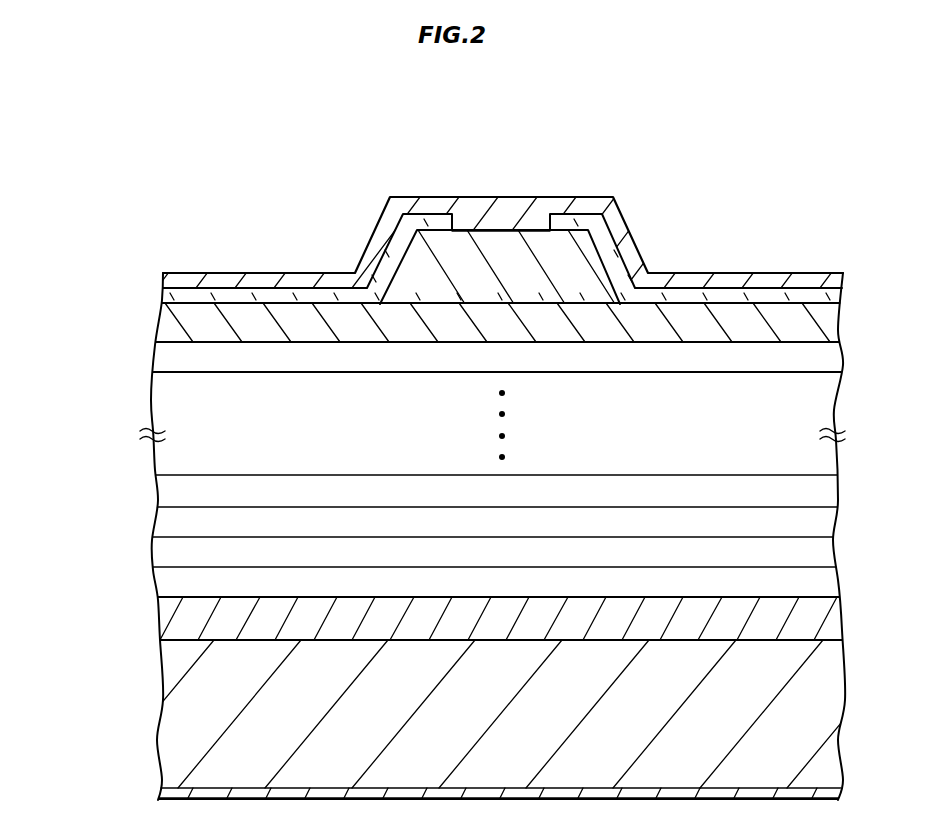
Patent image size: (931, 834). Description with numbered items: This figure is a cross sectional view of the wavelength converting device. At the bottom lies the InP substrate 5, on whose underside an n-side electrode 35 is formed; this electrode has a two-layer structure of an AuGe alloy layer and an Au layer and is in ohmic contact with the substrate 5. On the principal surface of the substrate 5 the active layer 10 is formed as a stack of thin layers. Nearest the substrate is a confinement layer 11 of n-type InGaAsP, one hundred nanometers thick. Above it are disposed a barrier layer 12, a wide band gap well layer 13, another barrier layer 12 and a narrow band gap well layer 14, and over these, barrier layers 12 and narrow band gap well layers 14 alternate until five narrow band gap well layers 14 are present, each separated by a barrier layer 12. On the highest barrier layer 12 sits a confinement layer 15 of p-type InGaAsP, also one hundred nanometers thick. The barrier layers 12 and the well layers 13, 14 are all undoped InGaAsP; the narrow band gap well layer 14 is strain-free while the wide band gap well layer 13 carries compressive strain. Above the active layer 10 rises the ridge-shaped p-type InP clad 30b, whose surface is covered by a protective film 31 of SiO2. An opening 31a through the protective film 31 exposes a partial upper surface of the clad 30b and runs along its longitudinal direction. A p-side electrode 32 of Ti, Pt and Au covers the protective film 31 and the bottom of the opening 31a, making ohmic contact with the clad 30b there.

The InP substrate 5 is at (168, 718).
The n-side electrode 35 is at (162, 795).
The active layer 10 is at (85, 298).
The confinement layer 11 is at (165, 615).
The barrier layer 12 is at (165, 583).
The wide band gap well layer 13 is at (165, 555).
The narrow band gap well layer 14 is at (165, 492).
The confinement layer 15 is at (172, 328).
The p-type InP clad 30b is at (390, 248).
The protective film 31 is at (583, 219).
The opening 31a is at (548, 227).
The p-side electrode 32 is at (730, 280).